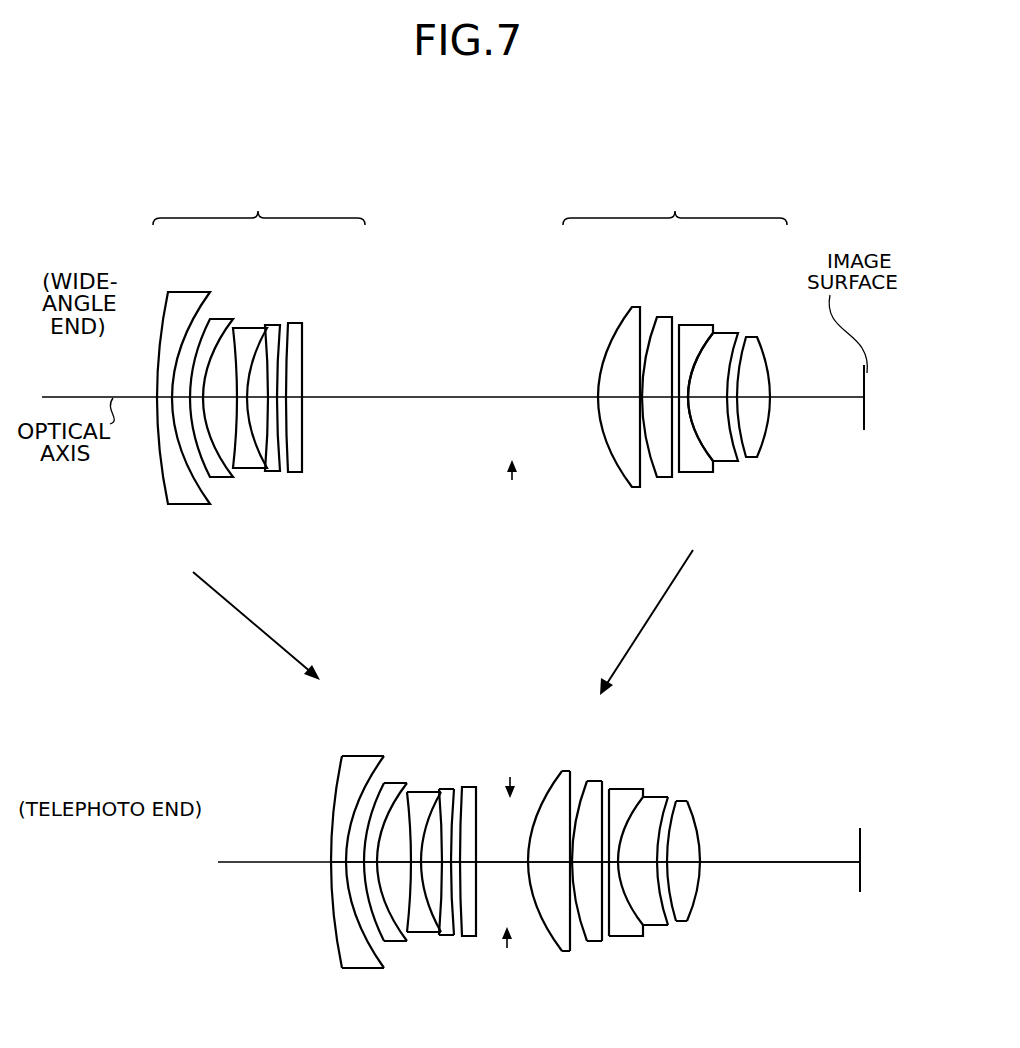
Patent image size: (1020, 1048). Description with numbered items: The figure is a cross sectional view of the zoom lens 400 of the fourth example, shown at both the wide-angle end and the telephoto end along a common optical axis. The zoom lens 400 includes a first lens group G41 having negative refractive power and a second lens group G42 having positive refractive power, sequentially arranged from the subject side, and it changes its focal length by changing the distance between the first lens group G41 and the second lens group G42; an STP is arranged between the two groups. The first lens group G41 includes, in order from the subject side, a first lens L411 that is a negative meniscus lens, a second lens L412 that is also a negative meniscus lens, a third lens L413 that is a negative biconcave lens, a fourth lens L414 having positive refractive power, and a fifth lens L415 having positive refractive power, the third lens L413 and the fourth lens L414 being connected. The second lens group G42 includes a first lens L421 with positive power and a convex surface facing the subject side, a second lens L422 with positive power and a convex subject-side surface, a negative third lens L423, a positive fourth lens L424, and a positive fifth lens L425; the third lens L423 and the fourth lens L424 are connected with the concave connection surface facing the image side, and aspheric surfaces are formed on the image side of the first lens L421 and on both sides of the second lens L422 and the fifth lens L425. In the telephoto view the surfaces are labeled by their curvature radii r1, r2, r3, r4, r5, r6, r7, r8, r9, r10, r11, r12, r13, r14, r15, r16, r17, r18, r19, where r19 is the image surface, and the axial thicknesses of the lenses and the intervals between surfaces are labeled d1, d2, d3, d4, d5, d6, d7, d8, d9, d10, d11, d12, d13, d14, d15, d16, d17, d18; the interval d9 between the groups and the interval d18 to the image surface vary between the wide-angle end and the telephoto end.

The zoom lens 400 is at (448, 185).
The first lens group G41 is at (251, 341).
The second lens group G42 is at (677, 333).
The element STP is at (511, 325).
The first lens L411 is at (198, 302).
The second lens L412 is at (219, 322).
The third lens L413 is at (248, 333).
The fourth lens L414 is at (274, 332).
The fifth lens L415 is at (303, 327).
The first lens L421 is at (619, 324).
The second lens L422 is at (658, 328).
The third lens L423 is at (686, 328).
The fourth lens L424 is at (727, 335).
The fifth lens L425 is at (752, 340).
The curvature radius r1 is at (340, 772).
The curvature radius r2 is at (375, 787).
The curvature radius r3 is at (383, 780).
The curvature radius r4 is at (395, 792).
The curvature radius r5 is at (407, 790).
The curvature radius r6 is at (423, 797).
The curvature radius r7 is at (447, 790).
The curvature radius r8 is at (462, 793).
The curvature radius r9 is at (480, 793).
The curvature radius r10 is at (553, 773).
The curvature radius r11 is at (570, 783).
The curvature radius r12 is at (580, 787).
The curvature radius r13 is at (598, 790).
The curvature radius r14 is at (610, 797).
The curvature radius r15 is at (635, 800).
The curvature radius r16 is at (662, 800).
The curvature radius r17 is at (683, 808).
The curvature radius r18 is at (695, 823).
The curvature radius r19 is at (858, 838).
The lens thickness d1 is at (338, 872).
The lens surface interval d2 is at (352, 875).
The lens thickness d3 is at (370, 875).
The lens surface interval d4 is at (402, 863).
The lens thickness d5 is at (422, 877).
The lens thickness d6 is at (447, 872).
The lens surface interval d7 is at (462, 872).
The lens thickness d8 is at (477, 872).
The lens surface interval d9 is at (510, 865).
The lens thickness d10 is at (552, 865).
The lens surface interval d11 is at (570, 870).
The lens thickness d12 is at (592, 868).
The lens surface interval d13 is at (603, 867).
The lens thickness d14 is at (617, 867).
The lens thickness d15 is at (638, 868).
The lens surface interval d16 is at (662, 870).
The lens thickness d17 is at (680, 865).
The lens surface interval d18 is at (793, 865).